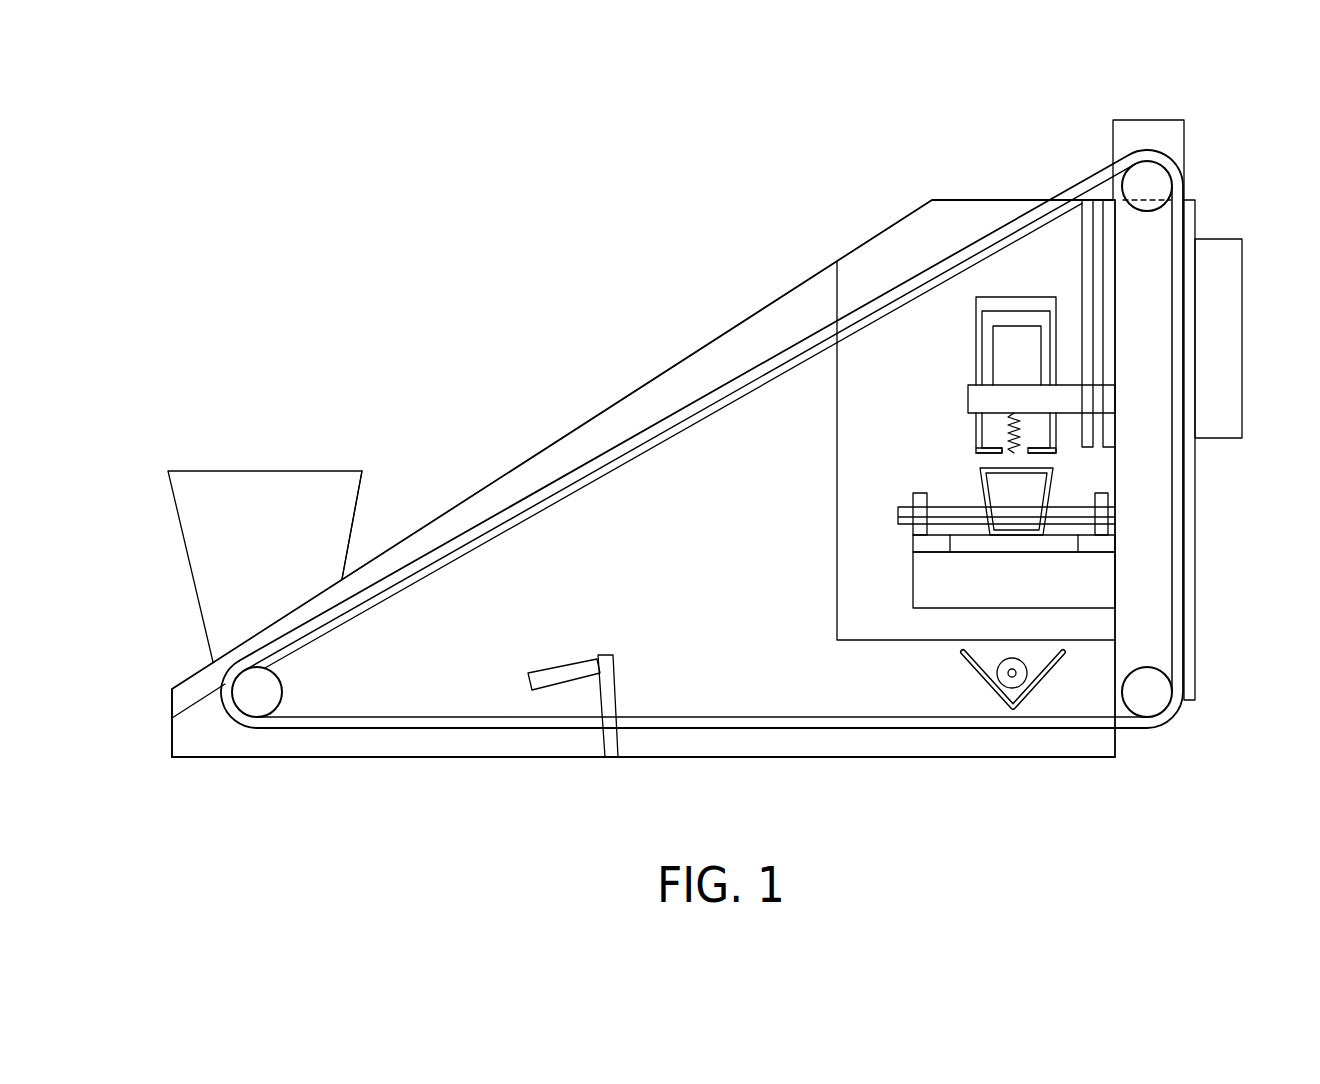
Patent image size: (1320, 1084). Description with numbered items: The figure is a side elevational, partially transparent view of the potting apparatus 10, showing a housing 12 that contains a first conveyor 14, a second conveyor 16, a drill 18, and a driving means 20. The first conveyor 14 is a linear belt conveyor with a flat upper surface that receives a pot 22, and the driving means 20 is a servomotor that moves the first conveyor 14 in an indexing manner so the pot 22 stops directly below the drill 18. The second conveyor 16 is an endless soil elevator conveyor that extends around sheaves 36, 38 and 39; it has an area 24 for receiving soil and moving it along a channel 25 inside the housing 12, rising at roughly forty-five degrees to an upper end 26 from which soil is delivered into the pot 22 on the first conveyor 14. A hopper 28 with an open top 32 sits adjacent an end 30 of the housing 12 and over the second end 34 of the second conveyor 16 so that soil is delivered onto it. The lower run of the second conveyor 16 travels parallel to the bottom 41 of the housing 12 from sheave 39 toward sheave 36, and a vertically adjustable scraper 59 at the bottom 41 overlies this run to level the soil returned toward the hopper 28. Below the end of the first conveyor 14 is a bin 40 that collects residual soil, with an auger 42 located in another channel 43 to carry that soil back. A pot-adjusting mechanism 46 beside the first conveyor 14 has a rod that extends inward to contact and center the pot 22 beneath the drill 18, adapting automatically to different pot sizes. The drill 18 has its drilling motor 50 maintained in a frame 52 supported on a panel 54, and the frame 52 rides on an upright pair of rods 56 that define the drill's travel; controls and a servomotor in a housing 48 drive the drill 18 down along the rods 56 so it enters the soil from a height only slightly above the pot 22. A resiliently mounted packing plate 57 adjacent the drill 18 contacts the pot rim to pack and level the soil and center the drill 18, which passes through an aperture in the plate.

The potting apparatus 10 is at (968, 147).
The housing 12 is at (873, 237).
The first conveyor 14 is at (1075, 549).
The second conveyor 16 is at (690, 408).
The drill 18 is at (1008, 440).
The driving means 20 is at (1242, 400).
The pot 22 is at (980, 485).
The area 24 is at (532, 494).
The channel 25 is at (703, 423).
The end 26 is at (1186, 176).
The hopper 28 is at (354, 520).
The end 30 is at (172, 712).
The open top 32 is at (284, 471).
The second end 34 is at (213, 692).
The sheave 36 is at (268, 690).
The sheave 38 is at (1163, 184).
The sheave 39 is at (1172, 718).
The bin 40 is at (837, 600).
The bottom 41 is at (830, 757).
The auger 42 is at (1030, 677).
The channel 43 is at (985, 680).
The pot-adjusting mechanism 46 is at (913, 529).
The housing 48 is at (1242, 283).
The drilling motor 50 is at (1000, 347).
The frame 52 is at (976, 372).
The panel 54 is at (968, 400).
The rods 56 is at (1088, 246).
The packing plate 57 is at (1040, 455).
The scraper 59 is at (565, 663).